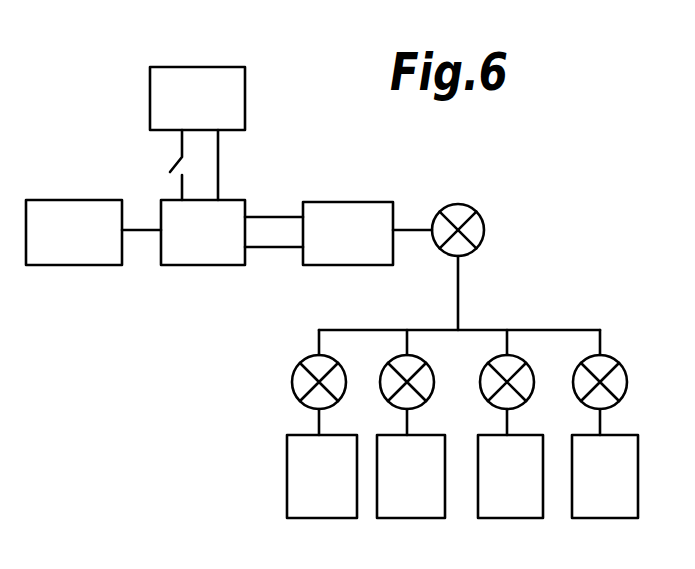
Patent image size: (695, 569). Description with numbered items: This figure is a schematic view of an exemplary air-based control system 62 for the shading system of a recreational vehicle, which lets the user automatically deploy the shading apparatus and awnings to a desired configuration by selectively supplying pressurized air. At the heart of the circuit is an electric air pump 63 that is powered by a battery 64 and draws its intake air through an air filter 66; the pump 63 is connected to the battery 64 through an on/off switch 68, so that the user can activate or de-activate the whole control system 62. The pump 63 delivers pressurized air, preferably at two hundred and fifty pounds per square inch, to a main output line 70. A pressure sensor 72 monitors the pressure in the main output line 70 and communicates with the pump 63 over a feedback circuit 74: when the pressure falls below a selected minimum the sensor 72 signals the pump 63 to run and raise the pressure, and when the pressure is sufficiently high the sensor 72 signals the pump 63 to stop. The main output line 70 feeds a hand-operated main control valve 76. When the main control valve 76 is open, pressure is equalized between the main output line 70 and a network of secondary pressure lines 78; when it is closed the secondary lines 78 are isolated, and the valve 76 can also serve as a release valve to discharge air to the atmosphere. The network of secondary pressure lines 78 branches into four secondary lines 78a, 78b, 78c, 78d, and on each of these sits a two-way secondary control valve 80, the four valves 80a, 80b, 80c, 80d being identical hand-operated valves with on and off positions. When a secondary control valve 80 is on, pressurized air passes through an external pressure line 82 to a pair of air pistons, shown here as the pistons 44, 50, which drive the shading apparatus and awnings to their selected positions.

The control system 62 is at (165, 348).
The battery 64 is at (207, 67).
The on/off switch 68 is at (176, 162).
The air filter 66 is at (42, 266).
The electric air pump 63 is at (202, 266).
The main output line 70 is at (255, 212).
The feedback circuit 74 is at (273, 250).
The pressure sensor 72 is at (350, 202).
The main control valve 76 is at (468, 201).
The secondary pressure lines 78 is at (462, 274).
The secondary line 78a is at (316, 341).
The secondary line 78b is at (406, 346).
The secondary line 78c is at (503, 342).
The secondary line 78d is at (601, 342).
The secondary control valve 80 is at (447, 371).
The secondary control valve 80a is at (292, 373).
The secondary control valve 80b is at (381, 382).
The secondary control valve 80c is at (481, 384).
The secondary control valve 80d is at (573, 384).
The external pressure line 82 is at (318, 418).
The air pistons 44 is at (462, 498).
The air bladder 50 is at (423, 519).